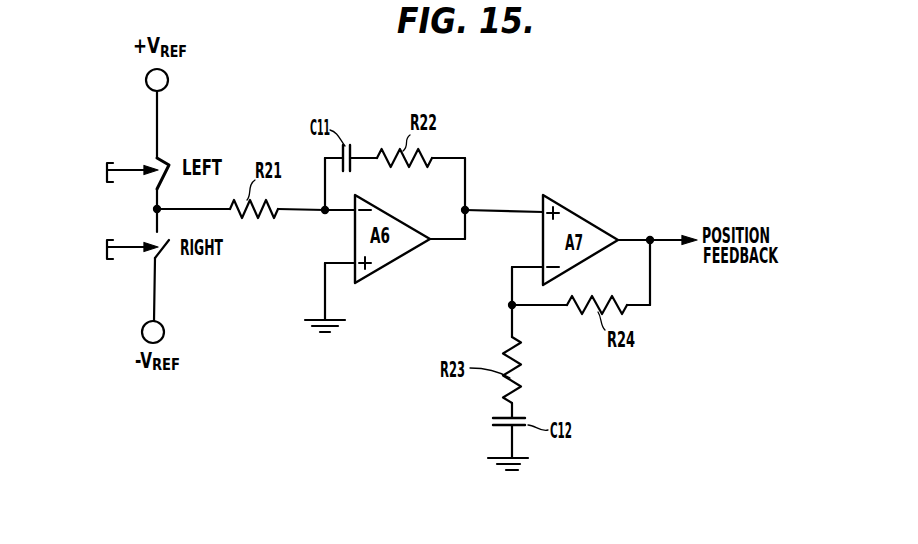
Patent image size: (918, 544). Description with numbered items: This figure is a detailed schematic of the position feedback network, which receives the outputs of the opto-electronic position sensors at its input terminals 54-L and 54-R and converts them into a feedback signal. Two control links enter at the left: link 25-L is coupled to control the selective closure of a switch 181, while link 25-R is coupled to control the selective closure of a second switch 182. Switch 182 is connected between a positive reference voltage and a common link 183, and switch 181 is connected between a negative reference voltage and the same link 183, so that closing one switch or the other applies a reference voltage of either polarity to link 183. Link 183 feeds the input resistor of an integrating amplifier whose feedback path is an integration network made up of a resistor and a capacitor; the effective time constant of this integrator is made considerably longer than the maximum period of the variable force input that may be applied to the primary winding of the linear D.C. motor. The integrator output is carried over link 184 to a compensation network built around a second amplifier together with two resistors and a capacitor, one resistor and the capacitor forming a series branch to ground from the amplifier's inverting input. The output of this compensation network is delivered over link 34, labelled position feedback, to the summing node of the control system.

The switch 182 is at (160, 158).
The switch 181 is at (160, 250).
The link 183 is at (195, 209).
The link 184 is at (493, 210).
The link 34 is at (660, 240).
The link 25-L is at (122, 168).
The link 25-R is at (121, 250).
The left input terminal 54-L is at (87, 169).
The right input terminal 54-R is at (87, 246).